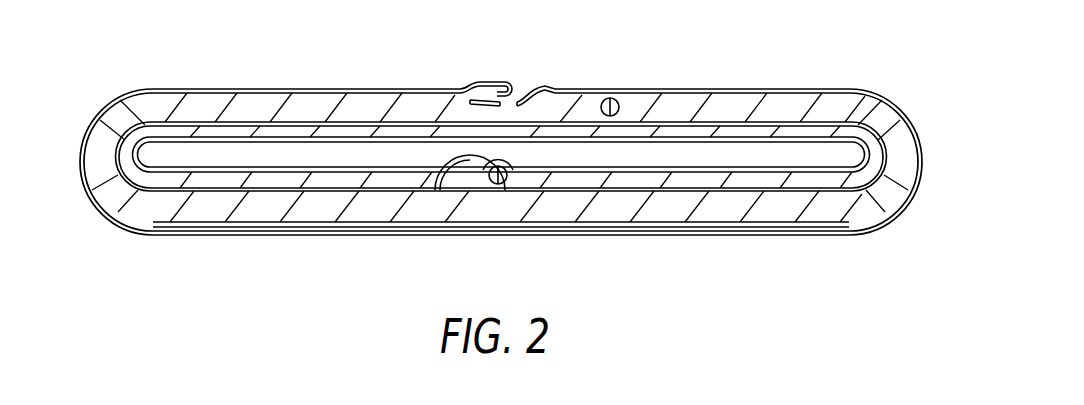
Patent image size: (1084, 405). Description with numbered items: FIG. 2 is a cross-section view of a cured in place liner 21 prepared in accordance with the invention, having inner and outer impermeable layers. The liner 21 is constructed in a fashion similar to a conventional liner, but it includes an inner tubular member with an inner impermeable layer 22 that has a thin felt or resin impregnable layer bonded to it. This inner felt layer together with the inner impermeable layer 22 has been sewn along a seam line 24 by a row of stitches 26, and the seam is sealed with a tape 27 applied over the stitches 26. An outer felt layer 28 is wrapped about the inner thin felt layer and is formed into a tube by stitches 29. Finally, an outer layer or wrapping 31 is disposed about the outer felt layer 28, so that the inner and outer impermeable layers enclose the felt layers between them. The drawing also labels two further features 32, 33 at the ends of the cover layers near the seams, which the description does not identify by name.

The cured in place liner 21 is at (637, 40).
The inner impermeable layer 22 is at (400, 140).
The seam line 24 is at (470, 178).
The row of stitches 26 is at (505, 185).
The tape 27 is at (445, 185).
The outer felt layer 28 is at (310, 137).
The stitches 29 is at (620, 106).
The outer layer or wrapping 31 is at (633, 236).
The hook clip 32 is at (486, 82).
The bottom cover strip 33 is at (570, 225).